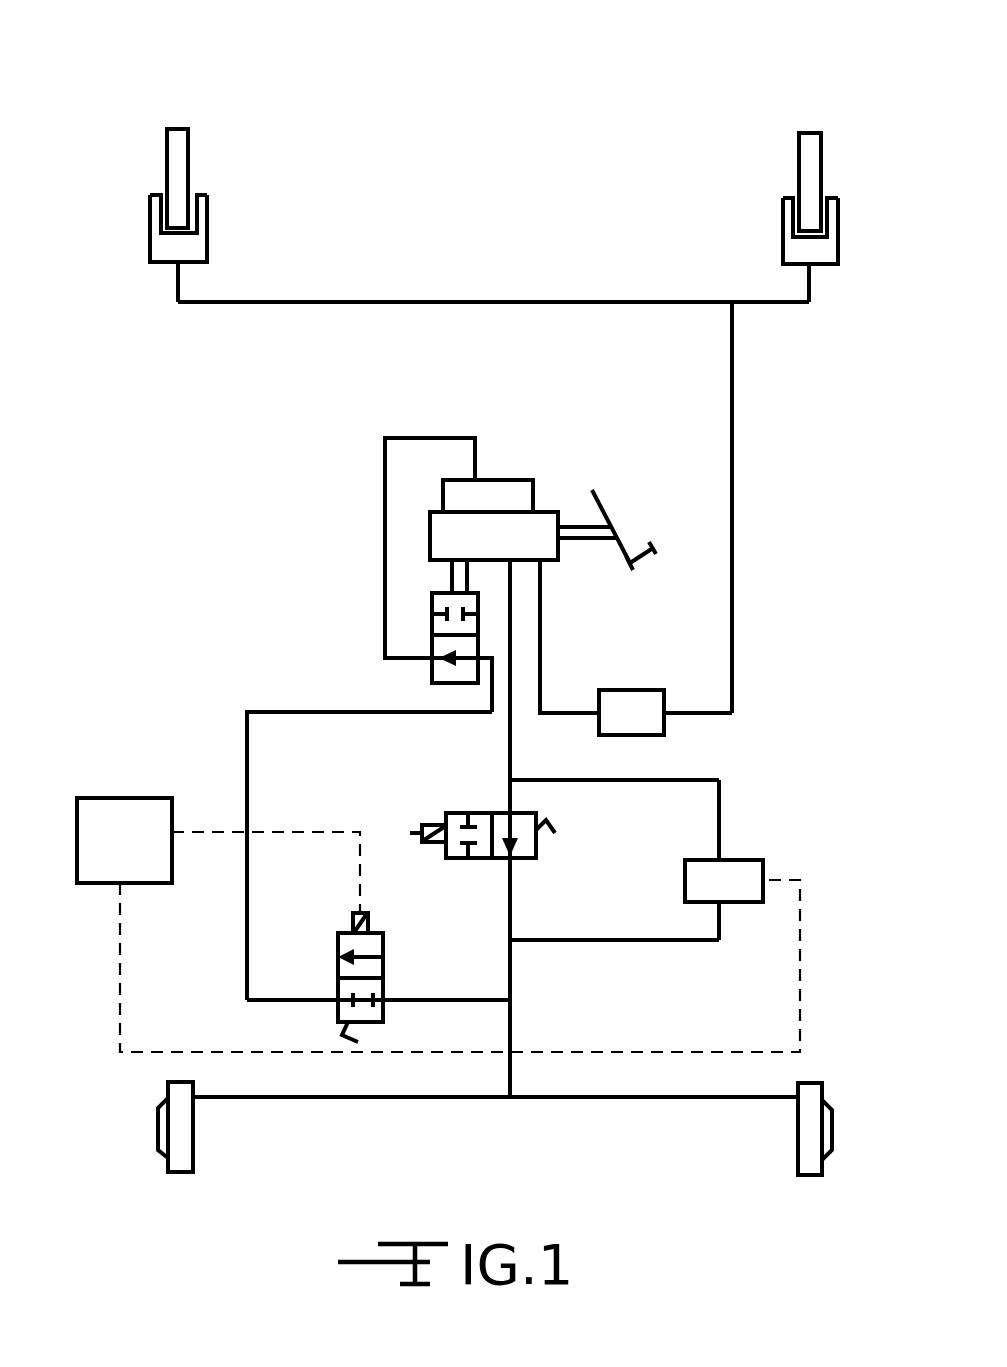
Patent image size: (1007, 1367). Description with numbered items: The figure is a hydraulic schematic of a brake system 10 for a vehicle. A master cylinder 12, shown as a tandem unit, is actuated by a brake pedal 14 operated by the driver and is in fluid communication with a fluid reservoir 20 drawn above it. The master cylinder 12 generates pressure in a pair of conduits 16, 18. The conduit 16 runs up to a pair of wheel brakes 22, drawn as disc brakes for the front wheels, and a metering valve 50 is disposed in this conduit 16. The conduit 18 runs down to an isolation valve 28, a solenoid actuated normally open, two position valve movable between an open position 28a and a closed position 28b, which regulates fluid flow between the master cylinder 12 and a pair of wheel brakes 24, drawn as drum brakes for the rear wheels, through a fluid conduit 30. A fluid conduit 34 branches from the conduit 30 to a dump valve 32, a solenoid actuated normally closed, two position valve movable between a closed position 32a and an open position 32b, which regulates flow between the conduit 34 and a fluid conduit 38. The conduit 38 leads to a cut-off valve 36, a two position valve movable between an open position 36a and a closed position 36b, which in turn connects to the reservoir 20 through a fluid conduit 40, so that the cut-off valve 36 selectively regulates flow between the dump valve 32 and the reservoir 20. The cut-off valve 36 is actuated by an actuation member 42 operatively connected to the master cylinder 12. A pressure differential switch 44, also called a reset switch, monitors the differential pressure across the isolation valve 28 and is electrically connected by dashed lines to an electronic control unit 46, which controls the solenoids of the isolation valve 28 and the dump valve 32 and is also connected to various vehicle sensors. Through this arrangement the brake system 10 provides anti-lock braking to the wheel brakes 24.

The brake system 10 is at (607, 128).
The master cylinder 12 is at (430, 520).
The brake pedal 14 is at (605, 500).
The conduit 16 is at (543, 590).
The conduit 18 is at (510, 617).
The fluid reservoir 20 is at (503, 480).
The wheel brakes 22 is at (150, 226).
The wheel brakes 24 is at (158, 1132).
The isolation valve 28 is at (500, 827).
The open position 28a is at (520, 858).
The closed position 28b is at (462, 813).
The fluid conduit 30 is at (513, 915).
The dump valve 32 is at (353, 977).
The closed position 32a is at (338, 1010).
The open position 32b is at (338, 952).
The fluid conduit 34 is at (418, 1000).
The cut-off valve 36 is at (395, 645).
The open position 36a is at (432, 668).
The closed position 36b is at (432, 630).
The fluid conduit 38 is at (247, 748).
The fluid conduit 40 is at (423, 438).
The actuation member 42 is at (450, 579).
The pressure differential switch 44 is at (748, 860).
The electronic control unit 46 is at (105, 798).
The metering valve 50 is at (608, 690).